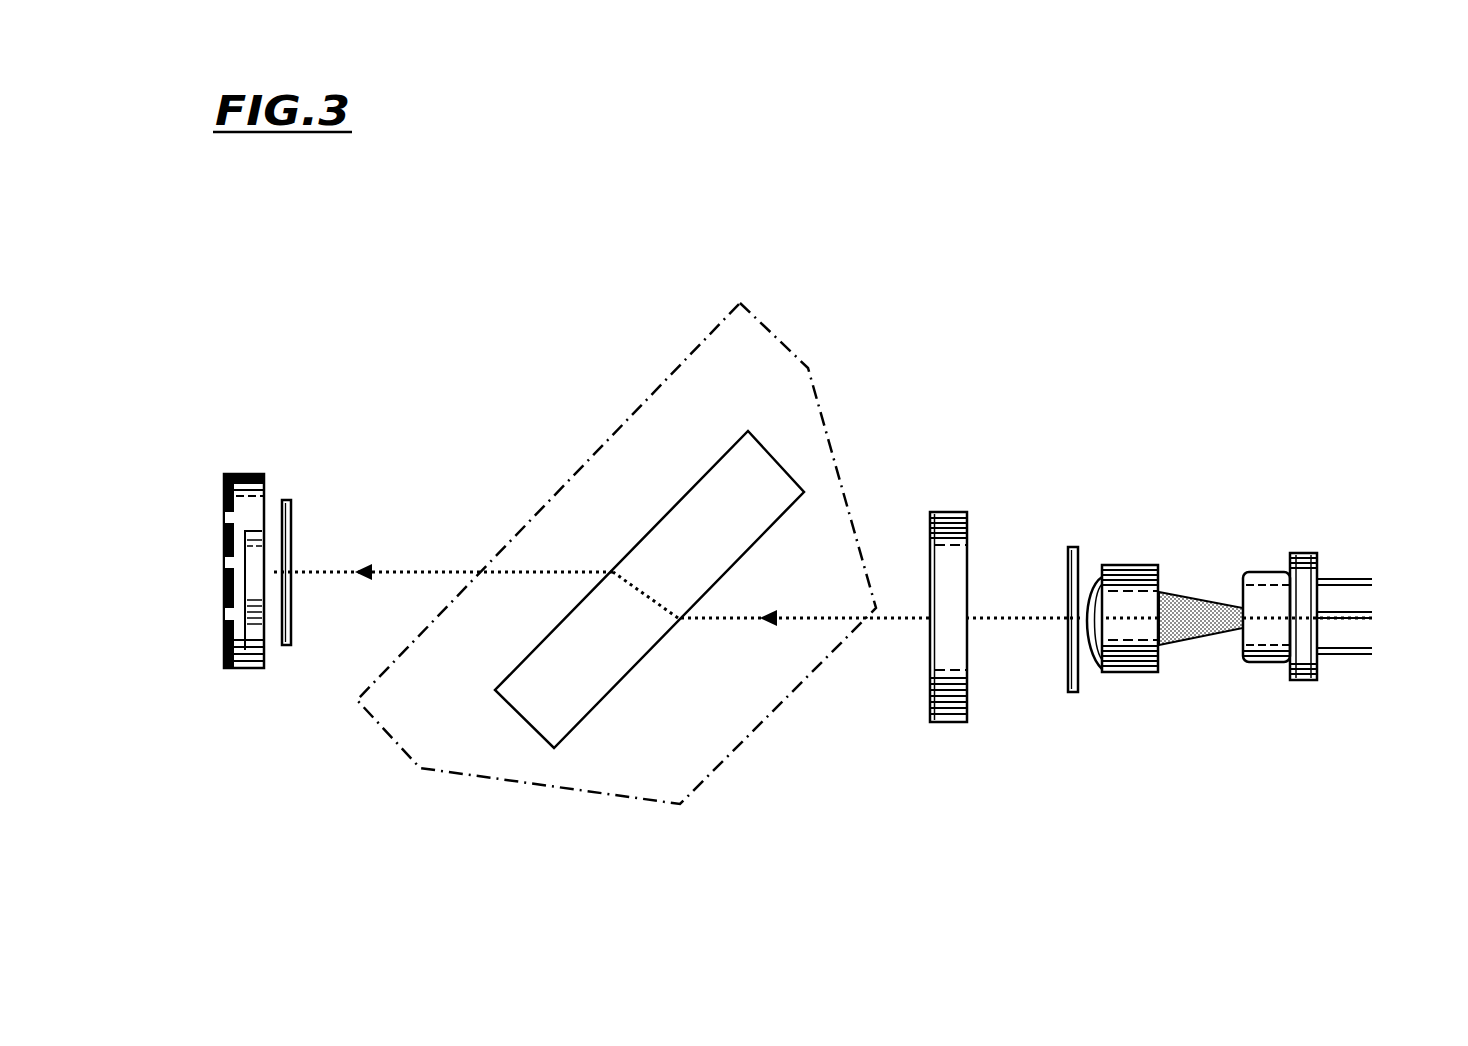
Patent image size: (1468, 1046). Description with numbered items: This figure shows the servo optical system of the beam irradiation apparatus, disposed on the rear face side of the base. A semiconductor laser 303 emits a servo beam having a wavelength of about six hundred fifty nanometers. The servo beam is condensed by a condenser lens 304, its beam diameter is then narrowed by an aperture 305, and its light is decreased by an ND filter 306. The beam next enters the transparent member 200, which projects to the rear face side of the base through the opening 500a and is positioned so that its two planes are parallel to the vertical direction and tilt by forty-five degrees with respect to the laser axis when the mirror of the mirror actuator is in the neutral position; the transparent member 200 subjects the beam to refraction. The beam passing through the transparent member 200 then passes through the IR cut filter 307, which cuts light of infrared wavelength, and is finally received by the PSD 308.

The opening 500a is at (700, 333).
The transparent member 200 is at (770, 448).
The semiconductor laser 303 is at (1313, 543).
The condenser lens 304 is at (1138, 555).
The aperture 305 is at (1073, 707).
The ND filter 306 is at (947, 497).
The IR cut filter 307 is at (288, 494).
The PSD 308 is at (245, 474).